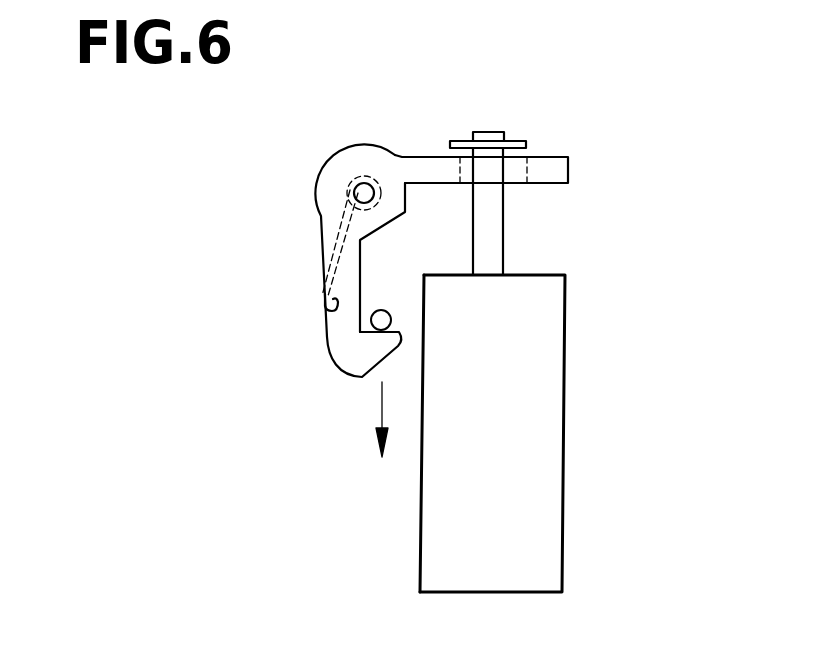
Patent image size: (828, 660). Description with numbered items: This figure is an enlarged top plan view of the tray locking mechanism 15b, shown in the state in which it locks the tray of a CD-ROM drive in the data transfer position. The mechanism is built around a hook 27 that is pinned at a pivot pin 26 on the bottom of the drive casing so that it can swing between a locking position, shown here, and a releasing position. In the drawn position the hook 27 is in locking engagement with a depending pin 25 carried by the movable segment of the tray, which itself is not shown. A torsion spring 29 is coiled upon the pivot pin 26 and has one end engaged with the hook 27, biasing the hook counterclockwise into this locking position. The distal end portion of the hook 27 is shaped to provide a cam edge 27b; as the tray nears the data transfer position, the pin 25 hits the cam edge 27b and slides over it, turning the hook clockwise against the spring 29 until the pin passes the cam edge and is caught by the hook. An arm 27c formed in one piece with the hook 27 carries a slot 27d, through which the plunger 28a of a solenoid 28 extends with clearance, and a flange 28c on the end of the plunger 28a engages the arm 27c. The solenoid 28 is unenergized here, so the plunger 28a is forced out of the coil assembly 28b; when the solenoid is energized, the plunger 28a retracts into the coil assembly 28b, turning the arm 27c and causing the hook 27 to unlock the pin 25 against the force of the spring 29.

The locking mechanism 15b is at (651, 174).
The depending pin 25 is at (390, 310).
The pivot pin 26 is at (354, 193).
The hook 27 is at (327, 337).
The cam edge 27b is at (360, 377).
The arm 27c is at (420, 157).
The slot 27d is at (523, 181).
The solenoid 28 is at (585, 425).
The plunger 28a is at (503, 245).
The coil assembly 28b is at (435, 550).
The flange 28c is at (513, 141).
The torsion spring 29 is at (320, 292).